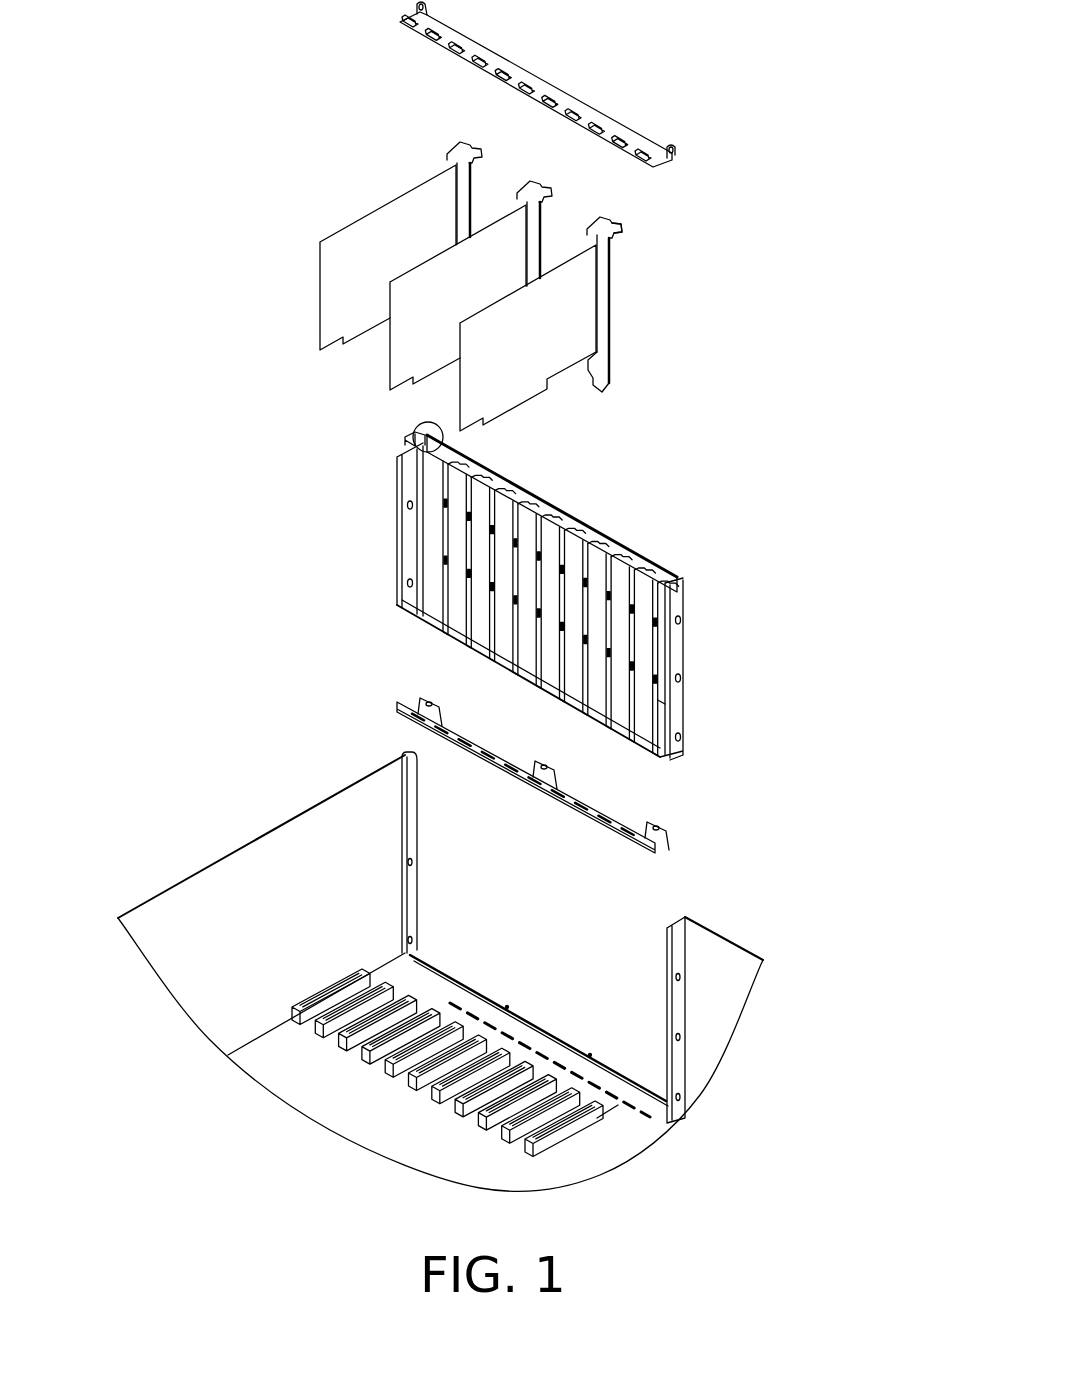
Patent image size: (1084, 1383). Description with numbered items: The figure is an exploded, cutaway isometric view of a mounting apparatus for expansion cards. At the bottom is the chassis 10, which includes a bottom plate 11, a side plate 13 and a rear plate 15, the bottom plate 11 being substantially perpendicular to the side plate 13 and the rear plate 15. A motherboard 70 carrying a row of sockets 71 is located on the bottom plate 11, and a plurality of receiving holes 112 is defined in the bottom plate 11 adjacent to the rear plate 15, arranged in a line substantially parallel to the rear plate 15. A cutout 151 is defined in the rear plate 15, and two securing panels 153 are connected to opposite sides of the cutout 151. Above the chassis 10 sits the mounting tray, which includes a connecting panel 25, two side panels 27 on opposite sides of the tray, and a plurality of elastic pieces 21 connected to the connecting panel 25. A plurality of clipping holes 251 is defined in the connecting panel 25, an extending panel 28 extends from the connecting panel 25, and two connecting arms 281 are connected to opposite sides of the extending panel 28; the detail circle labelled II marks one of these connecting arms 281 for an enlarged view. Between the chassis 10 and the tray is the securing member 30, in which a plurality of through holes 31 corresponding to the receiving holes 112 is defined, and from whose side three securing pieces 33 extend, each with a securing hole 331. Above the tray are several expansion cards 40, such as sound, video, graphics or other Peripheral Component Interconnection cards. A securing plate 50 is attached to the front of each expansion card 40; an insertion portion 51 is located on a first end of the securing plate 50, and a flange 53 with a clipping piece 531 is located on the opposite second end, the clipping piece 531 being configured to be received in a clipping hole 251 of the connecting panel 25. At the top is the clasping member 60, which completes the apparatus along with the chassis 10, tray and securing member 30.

The chassis 10 is at (452, 982).
The bottom plate 11 is at (632, 1128).
The receiving holes 112 is at (650, 1128).
The side plate 13 is at (200, 905).
The rear plate 15 is at (723, 957).
The cutout 151 is at (610, 938).
The securing panels 153 is at (412, 900).
The elastic pieces 21 is at (658, 690).
The connecting panel 25 is at (625, 586).
The clipping holes 251 is at (578, 560).
The side panels 27 is at (677, 645).
The extending panel 28 is at (528, 512).
The connecting arms 281 is at (402, 452).
The securing member 30 is at (540, 747).
The through holes 31 is at (410, 712).
The securing pieces 33 is at (501, 745).
The securing hole 331 is at (430, 697).
The expansion card 40 is at (503, 388).
The securing plate 50 is at (657, 309).
The insertion portion 51 is at (603, 390).
The flange 53 is at (602, 218).
The clipping piece 531 is at (624, 222).
The clasping member 60 is at (588, 72).
The motherboard 70 is at (402, 1102).
The sockets 71 is at (553, 1133).
The detail view indicator II is at (398, 432).